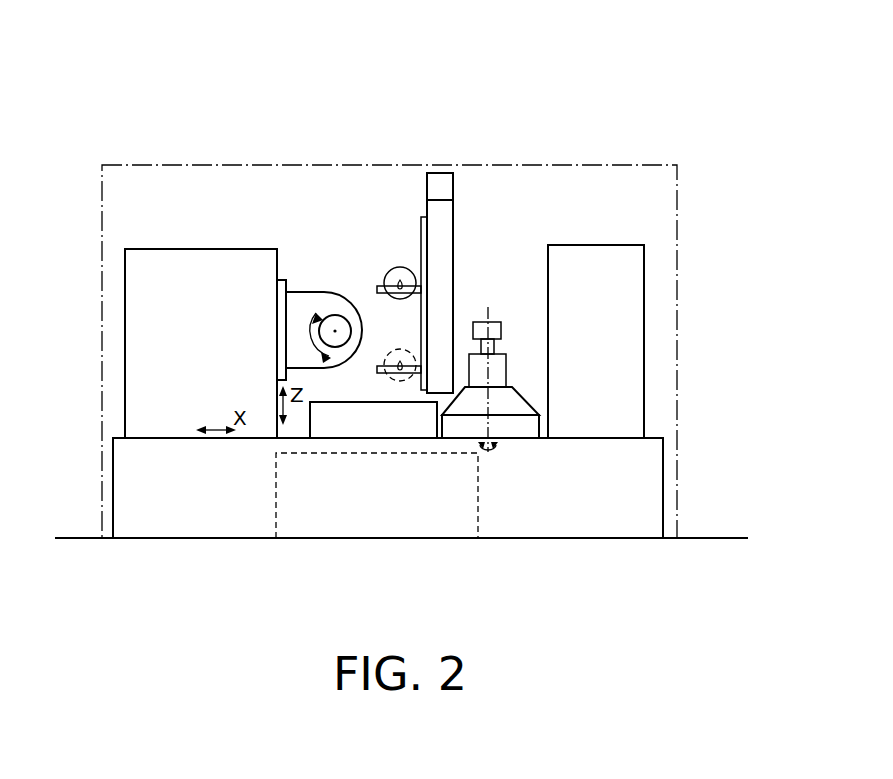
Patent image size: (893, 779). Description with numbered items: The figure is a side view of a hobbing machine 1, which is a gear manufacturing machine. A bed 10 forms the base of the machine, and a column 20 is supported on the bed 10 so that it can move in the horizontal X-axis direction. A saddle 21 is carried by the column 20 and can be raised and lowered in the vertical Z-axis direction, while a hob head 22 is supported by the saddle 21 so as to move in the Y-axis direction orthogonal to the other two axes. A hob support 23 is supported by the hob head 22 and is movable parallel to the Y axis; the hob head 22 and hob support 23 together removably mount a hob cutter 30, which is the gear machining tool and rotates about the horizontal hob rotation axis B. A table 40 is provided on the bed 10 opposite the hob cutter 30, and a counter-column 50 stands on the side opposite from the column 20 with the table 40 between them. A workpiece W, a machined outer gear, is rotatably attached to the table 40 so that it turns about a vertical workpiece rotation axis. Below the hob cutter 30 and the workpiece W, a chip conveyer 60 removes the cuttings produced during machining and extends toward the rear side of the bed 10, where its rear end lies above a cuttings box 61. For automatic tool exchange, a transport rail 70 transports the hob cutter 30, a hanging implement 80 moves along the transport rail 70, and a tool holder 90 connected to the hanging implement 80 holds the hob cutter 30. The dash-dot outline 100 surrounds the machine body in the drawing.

The hobbing machine 1 is at (720, 85).
The bed 10 is at (663, 487).
The column 20 is at (191, 278).
The saddle 21 is at (277, 320).
The hob head 22 is at (310, 291).
The hob support 23 is at (335, 315).
The hob cutter 30 is at (387, 352).
The table 40 is at (539, 426).
The counter-column 50 is at (644, 370).
The chip conveyer 60 is at (310, 413).
The cuttings box 61 is at (276, 498).
The transport rail 70 is at (453, 180).
The hanging implement 80 is at (453, 238).
The tool holder 90 is at (423, 217).
The machine body 100 is at (677, 183).
The workpiece W is at (501, 327).